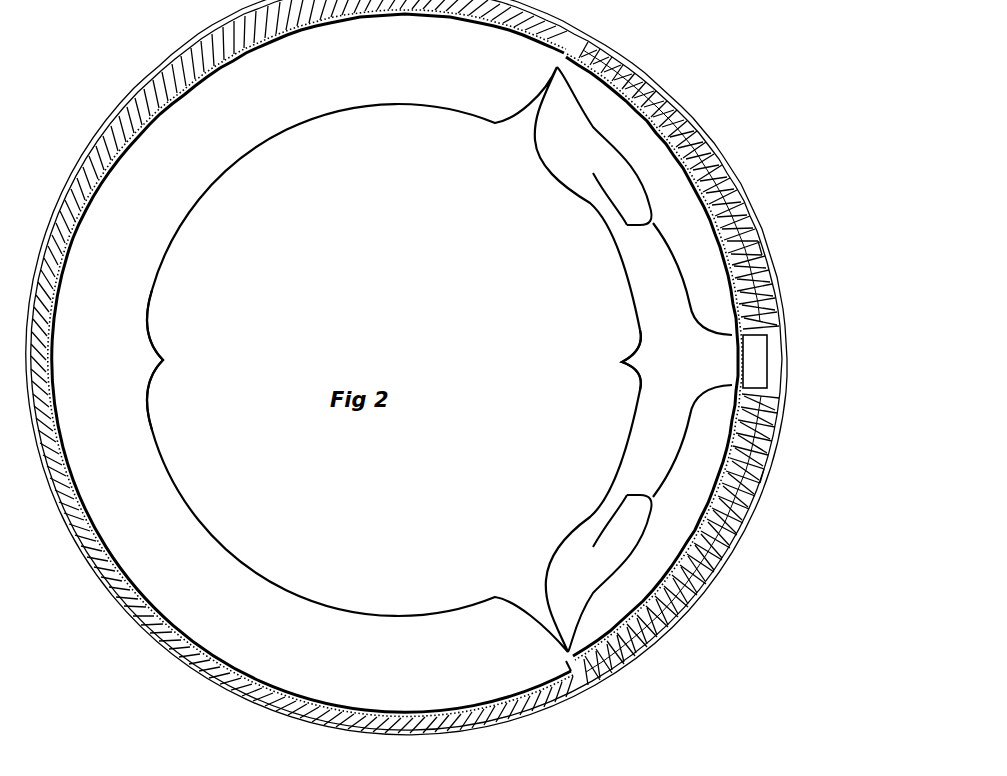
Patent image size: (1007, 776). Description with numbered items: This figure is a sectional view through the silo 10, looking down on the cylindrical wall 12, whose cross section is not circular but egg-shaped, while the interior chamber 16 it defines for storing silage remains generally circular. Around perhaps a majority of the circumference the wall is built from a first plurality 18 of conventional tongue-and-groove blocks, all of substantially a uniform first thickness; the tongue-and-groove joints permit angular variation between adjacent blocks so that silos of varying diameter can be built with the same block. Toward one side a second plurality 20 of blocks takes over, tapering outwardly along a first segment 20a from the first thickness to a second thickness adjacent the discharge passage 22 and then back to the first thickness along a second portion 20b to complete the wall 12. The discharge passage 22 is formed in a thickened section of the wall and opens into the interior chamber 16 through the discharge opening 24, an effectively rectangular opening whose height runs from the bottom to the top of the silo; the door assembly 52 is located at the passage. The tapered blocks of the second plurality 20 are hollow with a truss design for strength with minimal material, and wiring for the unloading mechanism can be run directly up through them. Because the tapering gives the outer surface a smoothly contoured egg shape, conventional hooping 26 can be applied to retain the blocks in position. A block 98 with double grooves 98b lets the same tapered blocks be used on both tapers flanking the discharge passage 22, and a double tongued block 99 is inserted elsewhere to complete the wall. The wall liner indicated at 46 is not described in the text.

The silo 10 is at (760, 90).
The cylindrical wall 12 is at (158, 657).
The interior chamber 16 is at (397, 323).
The first plurality of blocks 18 is at (173, 360).
The second plurality of blocks 20 is at (620, 360).
The first segment 20a is at (603, 146).
The second portion 20b is at (603, 573).
The discharge passage 22 is at (756, 356).
The discharge opening 24 is at (728, 378).
The hooping 26 is at (108, 606).
The liner 46 is at (165, 627).
The door assembly 52 is at (730, 352).
The block 98 is at (796, 418).
The double grooves 98b is at (770, 382).
The double tongued block 99 is at (620, 668).